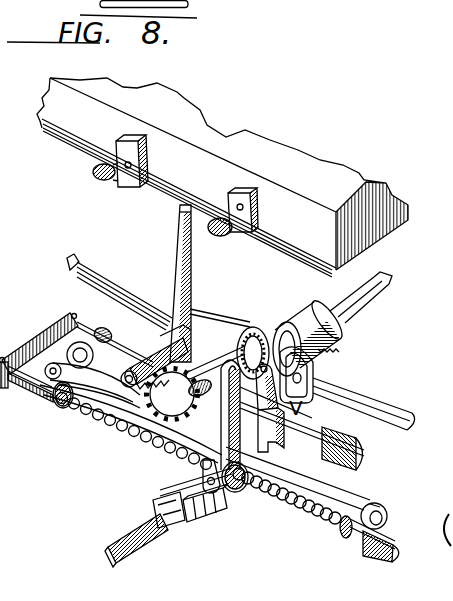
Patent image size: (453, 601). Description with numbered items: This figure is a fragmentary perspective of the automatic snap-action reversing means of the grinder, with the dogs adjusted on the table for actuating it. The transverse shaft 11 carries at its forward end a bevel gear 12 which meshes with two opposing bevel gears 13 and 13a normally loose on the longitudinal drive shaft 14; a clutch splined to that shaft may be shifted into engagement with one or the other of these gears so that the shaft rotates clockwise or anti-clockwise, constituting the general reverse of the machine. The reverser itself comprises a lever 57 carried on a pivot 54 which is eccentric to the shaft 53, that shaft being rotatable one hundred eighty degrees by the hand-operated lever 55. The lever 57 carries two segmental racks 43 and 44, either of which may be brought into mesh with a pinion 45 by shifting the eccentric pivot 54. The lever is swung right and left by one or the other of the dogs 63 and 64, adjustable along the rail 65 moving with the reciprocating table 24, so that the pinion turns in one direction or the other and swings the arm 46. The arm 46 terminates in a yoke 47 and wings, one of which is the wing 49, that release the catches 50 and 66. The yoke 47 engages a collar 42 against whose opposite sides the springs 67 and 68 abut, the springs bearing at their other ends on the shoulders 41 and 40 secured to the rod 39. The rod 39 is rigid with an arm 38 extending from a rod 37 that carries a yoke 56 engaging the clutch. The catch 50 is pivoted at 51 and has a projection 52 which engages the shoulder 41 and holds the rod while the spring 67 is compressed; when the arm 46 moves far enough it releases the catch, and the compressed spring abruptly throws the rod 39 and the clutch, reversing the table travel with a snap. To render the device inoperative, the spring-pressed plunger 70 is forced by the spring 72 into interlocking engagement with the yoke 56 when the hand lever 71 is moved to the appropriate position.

The transverse shaft 11 is at (355, 311).
The bevel gear 12 is at (289, 330).
The bevel gear 13 is at (330, 366).
The bevel gear 13a is at (262, 331).
The longitudinal drive shaft 14 is at (383, 408).
The table 24 is at (363, 183).
The rod 37 is at (85, 326).
The arm 38 is at (43, 340).
The rod 39 is at (23, 390).
The shoulder 40 is at (58, 406).
The shoulder 41 is at (350, 538).
The collar 42 is at (237, 493).
The segmental rack 43 is at (215, 372).
The segmental rack 44 is at (150, 443).
The pinion 45 is at (172, 394).
The arm 46 is at (259, 506).
The yoke 47 is at (165, 486).
The wing 49 is at (200, 463).
The catch 50 is at (337, 503).
The pivot 51 is at (388, 513).
The projection 52 is at (358, 517).
The shaft 53 is at (160, 354).
The pivot 54 is at (170, 338).
The hand-operated lever 55 is at (92, 381).
The yoke 56 is at (322, 447).
The lever 57 is at (190, 258).
The dog 63 is at (240, 200).
The dog 64 is at (132, 142).
The rail 65 is at (295, 242).
The catch 66 is at (103, 396).
The spring 67 is at (306, 523).
The spring 68 is at (118, 441).
The spring-pressed plunger 70 is at (270, 408).
The hand lever 71 is at (128, 549).
The spring 72 is at (181, 527).